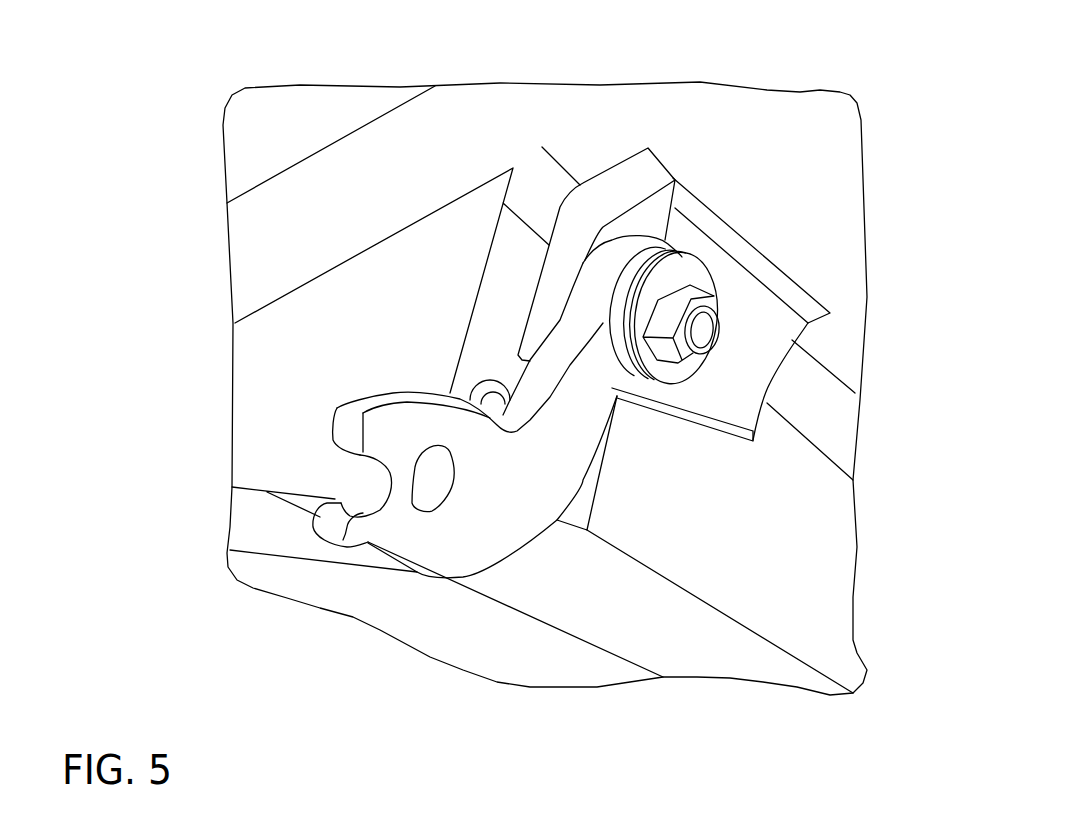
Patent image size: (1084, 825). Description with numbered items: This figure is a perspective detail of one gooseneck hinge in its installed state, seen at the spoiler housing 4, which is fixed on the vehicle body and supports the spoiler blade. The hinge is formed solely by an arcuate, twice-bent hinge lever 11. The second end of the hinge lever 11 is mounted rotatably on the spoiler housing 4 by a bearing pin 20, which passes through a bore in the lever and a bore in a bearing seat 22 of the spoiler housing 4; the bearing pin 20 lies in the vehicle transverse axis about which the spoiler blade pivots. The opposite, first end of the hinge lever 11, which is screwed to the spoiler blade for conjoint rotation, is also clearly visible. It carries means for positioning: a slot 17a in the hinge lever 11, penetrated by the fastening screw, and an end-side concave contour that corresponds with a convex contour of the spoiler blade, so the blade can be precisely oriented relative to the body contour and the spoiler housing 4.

The spoiler housing 4 is at (835, 138).
The hinge lever 11 is at (530, 497).
The means for positioning (slot) 17a is at (430, 478).
The bearing pin 20 is at (706, 332).
The bearing seat 22 is at (607, 187).